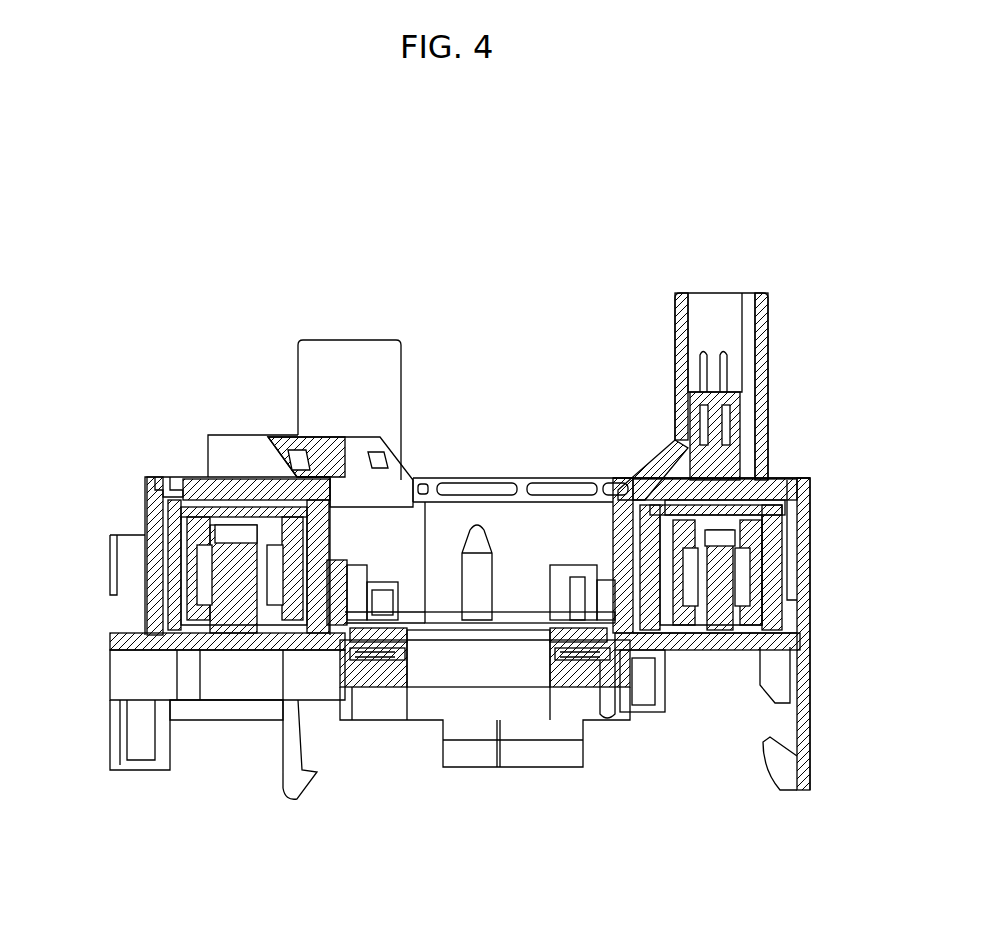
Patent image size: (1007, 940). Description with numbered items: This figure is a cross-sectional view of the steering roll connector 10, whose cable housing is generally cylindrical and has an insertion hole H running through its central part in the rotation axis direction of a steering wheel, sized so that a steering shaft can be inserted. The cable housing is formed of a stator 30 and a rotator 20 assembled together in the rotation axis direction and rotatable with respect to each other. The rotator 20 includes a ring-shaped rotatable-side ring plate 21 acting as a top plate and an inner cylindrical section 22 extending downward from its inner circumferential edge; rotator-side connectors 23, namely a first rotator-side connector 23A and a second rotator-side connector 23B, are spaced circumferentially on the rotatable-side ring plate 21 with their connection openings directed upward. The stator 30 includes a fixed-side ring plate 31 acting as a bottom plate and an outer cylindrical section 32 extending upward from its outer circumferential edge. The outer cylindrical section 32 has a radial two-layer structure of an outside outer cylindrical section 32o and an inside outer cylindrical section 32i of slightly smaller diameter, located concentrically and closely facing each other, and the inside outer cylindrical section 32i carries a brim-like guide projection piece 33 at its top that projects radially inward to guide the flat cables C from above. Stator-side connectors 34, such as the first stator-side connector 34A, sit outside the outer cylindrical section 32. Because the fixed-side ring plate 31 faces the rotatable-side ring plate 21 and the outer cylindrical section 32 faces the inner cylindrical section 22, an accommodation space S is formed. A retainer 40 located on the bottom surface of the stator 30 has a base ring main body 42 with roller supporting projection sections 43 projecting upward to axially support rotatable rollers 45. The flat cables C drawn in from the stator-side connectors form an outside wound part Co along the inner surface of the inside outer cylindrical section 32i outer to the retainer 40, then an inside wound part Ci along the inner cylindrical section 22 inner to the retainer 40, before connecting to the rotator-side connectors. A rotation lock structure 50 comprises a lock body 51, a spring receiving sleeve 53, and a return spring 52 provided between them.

The steering roll connector 10 is at (214, 305).
The rotator 20 is at (487, 477).
The rotatable-side ring plate 21 is at (180, 503).
The inner cylindrical section 22 is at (343, 530).
The rotator-side connectors 23 is at (550, 360).
The first rotator-side connector 23A is at (352, 340).
The second rotator-side connector 23B is at (715, 292).
The stator 30 is at (218, 722).
The fixed-side ring plate 31 is at (200, 702).
The outer cylindrical section 32 is at (62, 510).
The outside outer cylindrical section 32o is at (145, 522).
The inside outer cylindrical section 32i is at (150, 601).
The guide projection piece 33 is at (173, 487).
The stator-side connectors 34 is at (411, 651).
The first stator-side connector 34A is at (110, 690).
The retainer 40 is at (767, 617).
The base ring main body 42 is at (293, 645).
The roller supporting projection sections 43 is at (207, 617).
The rotatable rollers 45 is at (767, 547).
The rotation lock structure 50 is at (432, 772).
The lock body 51 is at (427, 652).
The return spring 52 is at (407, 653).
The spring receiving sleeve 53 is at (373, 683).
The insertion hole H is at (536, 551).
The accommodation space S is at (753, 510).
The flat cables C is at (532, 523).
The inside wound part Ci is at (628, 515).
The outside wound part Co is at (782, 570).